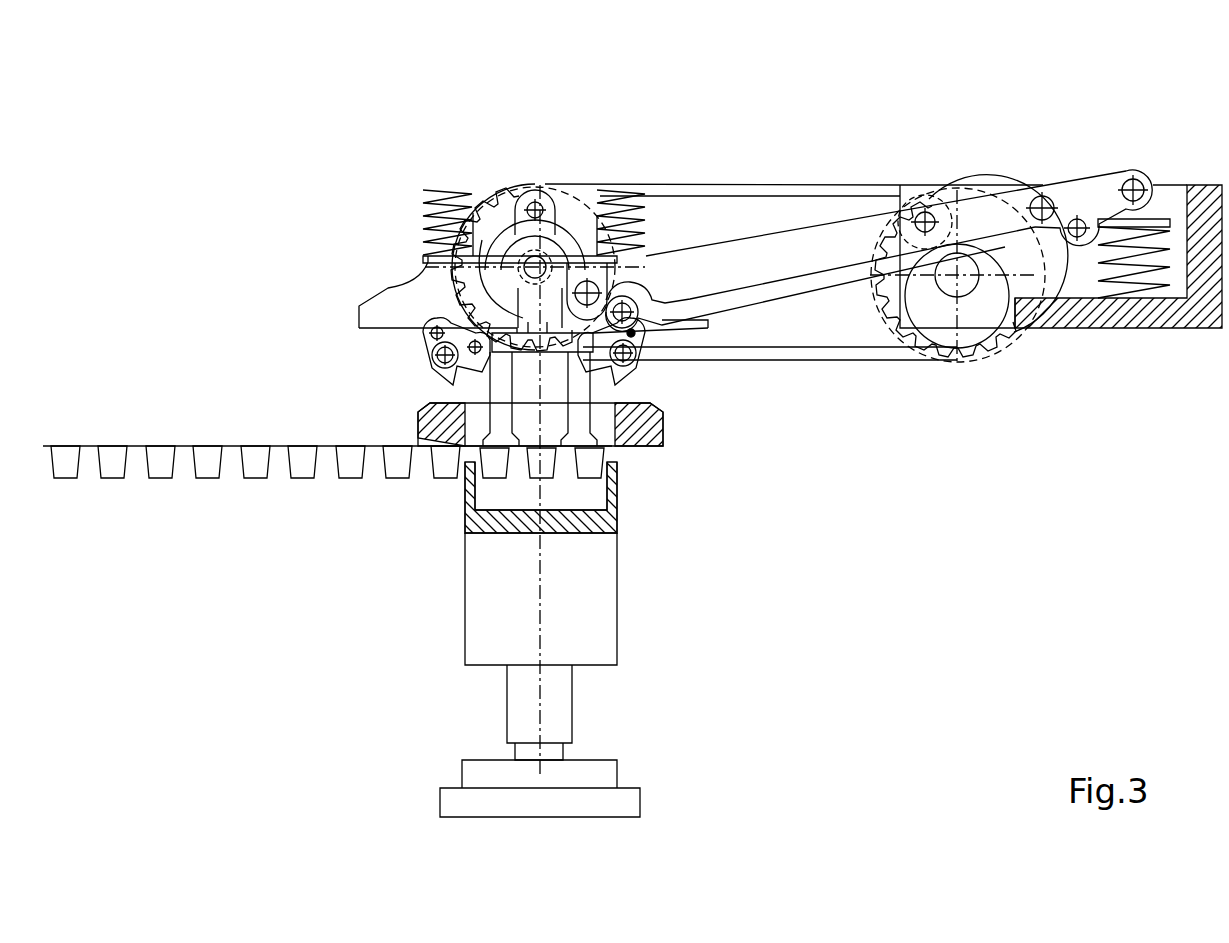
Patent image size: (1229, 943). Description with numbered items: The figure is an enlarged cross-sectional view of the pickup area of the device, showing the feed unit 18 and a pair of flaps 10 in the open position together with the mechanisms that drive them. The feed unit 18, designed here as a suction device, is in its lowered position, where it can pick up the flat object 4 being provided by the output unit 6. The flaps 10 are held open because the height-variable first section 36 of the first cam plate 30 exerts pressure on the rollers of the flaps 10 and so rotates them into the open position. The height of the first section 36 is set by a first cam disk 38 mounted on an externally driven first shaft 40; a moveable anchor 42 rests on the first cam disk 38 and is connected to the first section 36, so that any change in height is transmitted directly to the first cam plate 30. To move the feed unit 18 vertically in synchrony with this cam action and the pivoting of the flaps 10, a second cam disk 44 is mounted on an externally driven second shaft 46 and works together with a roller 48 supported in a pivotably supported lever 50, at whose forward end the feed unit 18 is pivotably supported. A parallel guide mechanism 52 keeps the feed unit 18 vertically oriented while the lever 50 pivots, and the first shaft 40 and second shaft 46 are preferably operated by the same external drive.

The flat object 4 is at (540, 460).
The output unit 6 is at (585, 612).
The pair of flaps 10 is at (430, 360).
The feed unit 18 is at (612, 447).
The first cam plate 30 is at (427, 266).
The first section of the first cam plate 36 is at (410, 305).
The first cam disk 38 is at (423, 230).
The first shaft 40 is at (537, 264).
The moveable anchor 42 is at (500, 287).
The second cam disk 44 is at (970, 315).
The second shaft 46 is at (1023, 327).
The roller 48 is at (943, 212).
The lever 50 is at (760, 255).
The parallel guide mechanism 52 is at (820, 288).